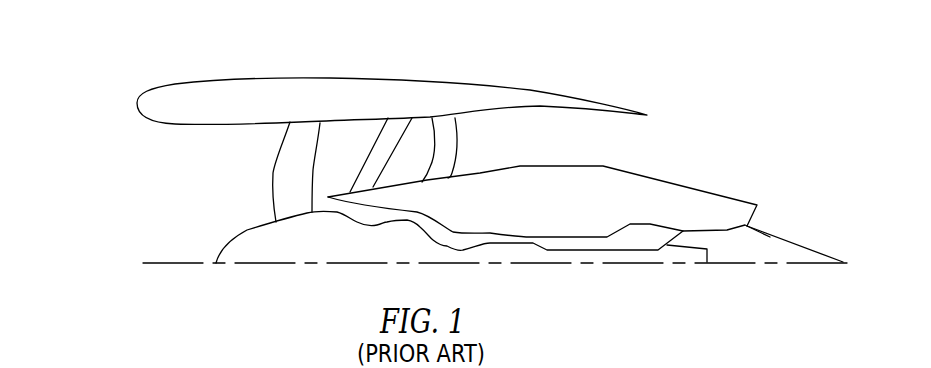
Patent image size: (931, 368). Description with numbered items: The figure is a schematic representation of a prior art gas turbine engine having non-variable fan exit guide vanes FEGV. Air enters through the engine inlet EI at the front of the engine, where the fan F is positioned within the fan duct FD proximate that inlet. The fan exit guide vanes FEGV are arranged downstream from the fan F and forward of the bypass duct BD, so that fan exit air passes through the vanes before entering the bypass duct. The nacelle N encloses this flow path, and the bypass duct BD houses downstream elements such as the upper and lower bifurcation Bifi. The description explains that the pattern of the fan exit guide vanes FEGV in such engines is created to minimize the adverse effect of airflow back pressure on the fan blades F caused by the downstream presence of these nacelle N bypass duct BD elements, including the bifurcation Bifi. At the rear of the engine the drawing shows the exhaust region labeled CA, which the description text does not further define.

The nacelle N is at (425, 78).
The fan F is at (268, 177).
The fan duct FD is at (347, 142).
The fan exit guide vanes FEGV is at (382, 133).
The bifurcation Bifi is at (447, 125).
The bypass duct BD is at (550, 147).
The exhaust cone CA is at (818, 262).
The engine inlet EI is at (137, 209).